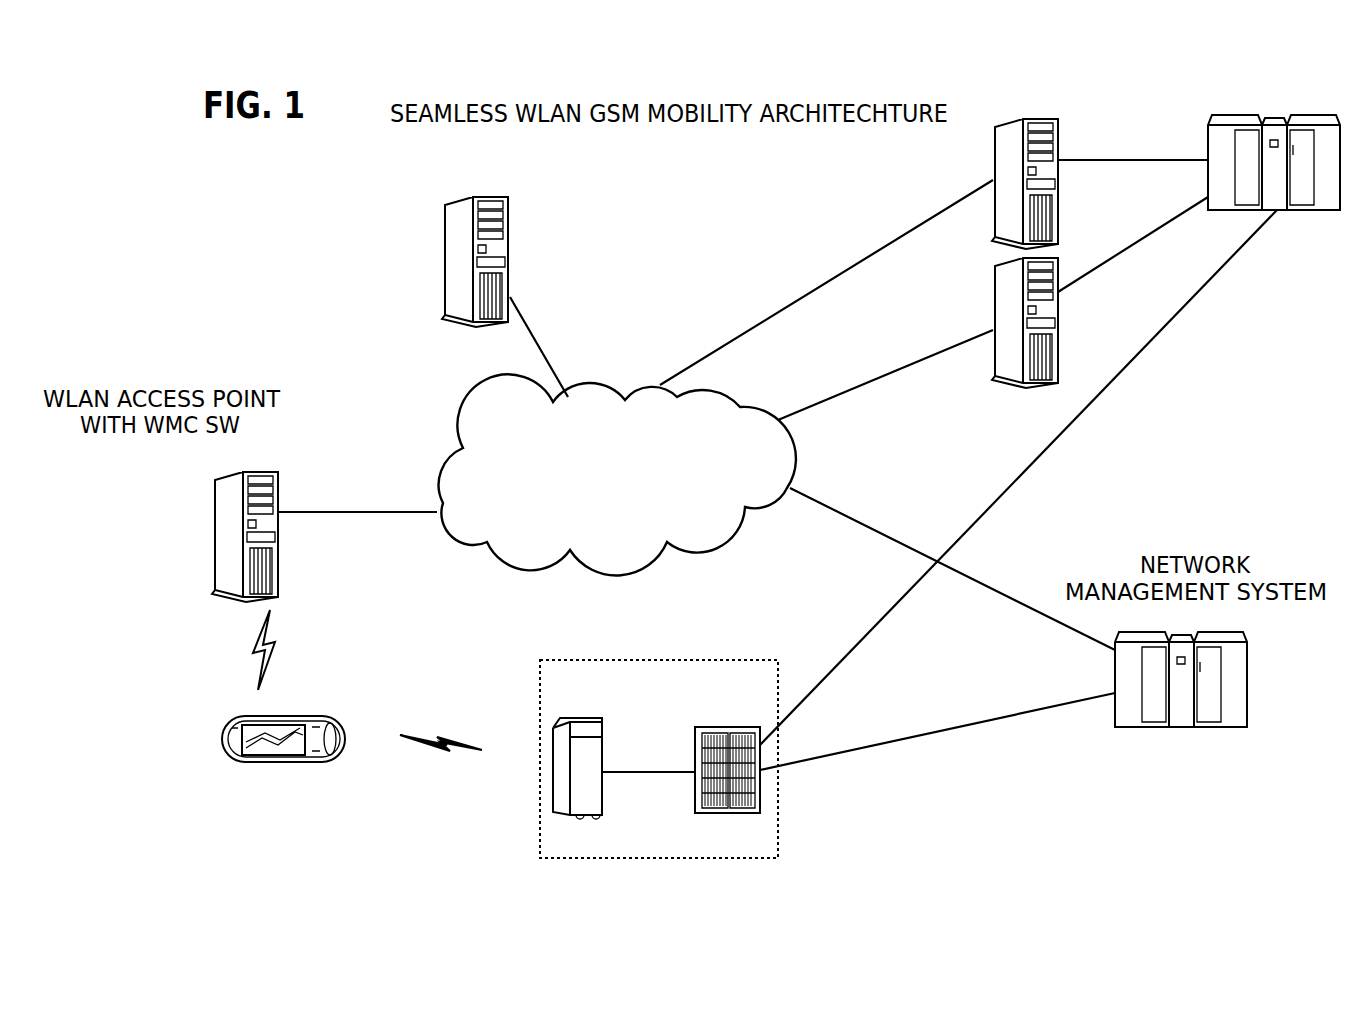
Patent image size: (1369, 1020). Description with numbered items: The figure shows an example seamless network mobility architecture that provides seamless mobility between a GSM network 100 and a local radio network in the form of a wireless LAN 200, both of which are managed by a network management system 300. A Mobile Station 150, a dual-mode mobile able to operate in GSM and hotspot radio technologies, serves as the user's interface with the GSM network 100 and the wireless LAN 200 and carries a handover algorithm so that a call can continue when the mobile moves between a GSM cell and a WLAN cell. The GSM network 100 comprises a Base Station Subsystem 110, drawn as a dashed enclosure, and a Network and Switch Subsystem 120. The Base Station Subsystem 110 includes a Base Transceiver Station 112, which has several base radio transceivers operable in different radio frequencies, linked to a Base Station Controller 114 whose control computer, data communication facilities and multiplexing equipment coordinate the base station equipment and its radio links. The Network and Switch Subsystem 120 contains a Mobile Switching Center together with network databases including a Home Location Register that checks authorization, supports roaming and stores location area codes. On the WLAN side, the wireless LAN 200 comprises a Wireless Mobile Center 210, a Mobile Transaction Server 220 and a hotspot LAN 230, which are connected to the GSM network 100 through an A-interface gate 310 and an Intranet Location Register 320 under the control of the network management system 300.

The GSM network 100 is at (466, 672).
The Base Station Subsystem 110 is at (647, 660).
The Base Transceiver Station 112 is at (604, 792).
The Base Station Controller 114 is at (760, 812).
The Network and Switch Subsystem 120 is at (1322, 212).
The Mobile Station 150 is at (242, 758).
The wireless LAN 200 is at (195, 676).
The Wireless Mobile Center 210 is at (277, 548).
The Mobile Transaction Server 220 is at (510, 265).
The hotspot LAN 230 is at (630, 503).
The network management system 300 is at (1248, 683).
The A-interface gate 310 is at (1058, 178).
The Intranet Location Register 320 is at (1058, 318).